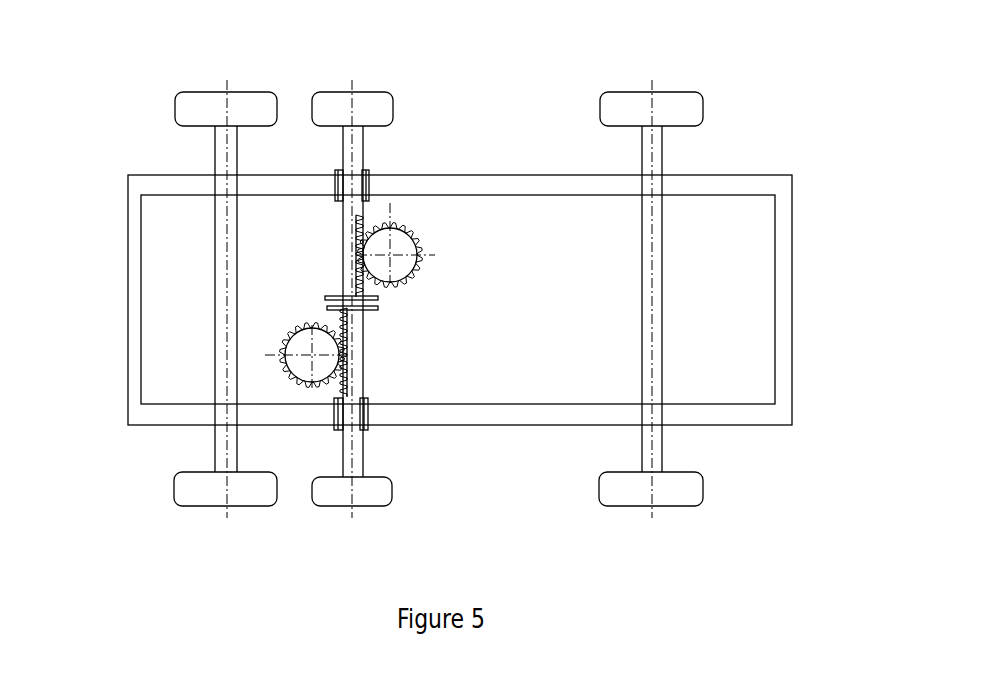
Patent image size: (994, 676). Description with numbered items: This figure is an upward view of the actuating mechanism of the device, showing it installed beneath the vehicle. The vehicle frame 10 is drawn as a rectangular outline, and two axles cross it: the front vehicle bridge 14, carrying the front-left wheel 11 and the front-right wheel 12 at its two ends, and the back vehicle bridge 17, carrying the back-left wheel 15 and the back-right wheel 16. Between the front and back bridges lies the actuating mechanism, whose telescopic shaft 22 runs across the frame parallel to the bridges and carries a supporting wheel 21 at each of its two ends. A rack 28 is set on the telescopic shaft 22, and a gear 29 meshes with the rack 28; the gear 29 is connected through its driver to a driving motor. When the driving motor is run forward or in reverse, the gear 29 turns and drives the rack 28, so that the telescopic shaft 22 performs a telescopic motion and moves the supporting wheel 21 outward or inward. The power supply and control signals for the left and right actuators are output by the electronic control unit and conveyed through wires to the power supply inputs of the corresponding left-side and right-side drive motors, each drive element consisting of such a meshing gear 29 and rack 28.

The vehicle frame 10 is at (132, 263).
The front-left wheel 11 is at (200, 490).
The front-right wheel 12 is at (198, 103).
The front vehicle bridge 14 is at (223, 245).
The back-left wheel 15 is at (685, 488).
The back-right wheel 16 is at (688, 108).
The back vehicle bridge 17 is at (650, 245).
The supporting wheel 21 is at (380, 108).
The telescopic shaft 22 is at (353, 443).
The rack 28 is at (343, 332).
The gear 29 is at (296, 342).